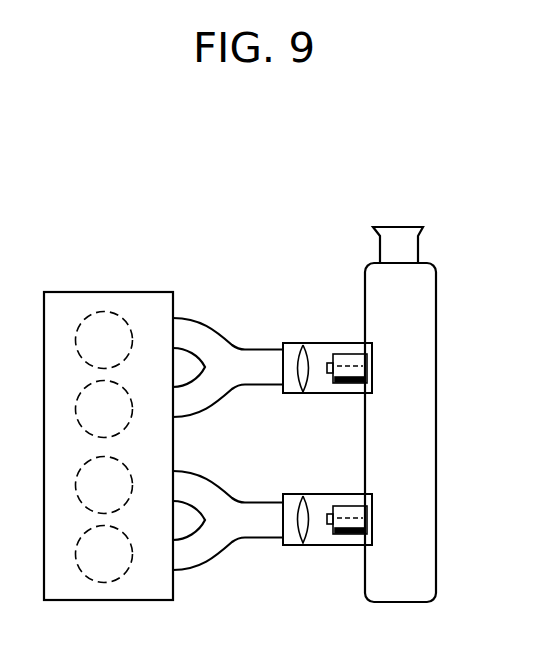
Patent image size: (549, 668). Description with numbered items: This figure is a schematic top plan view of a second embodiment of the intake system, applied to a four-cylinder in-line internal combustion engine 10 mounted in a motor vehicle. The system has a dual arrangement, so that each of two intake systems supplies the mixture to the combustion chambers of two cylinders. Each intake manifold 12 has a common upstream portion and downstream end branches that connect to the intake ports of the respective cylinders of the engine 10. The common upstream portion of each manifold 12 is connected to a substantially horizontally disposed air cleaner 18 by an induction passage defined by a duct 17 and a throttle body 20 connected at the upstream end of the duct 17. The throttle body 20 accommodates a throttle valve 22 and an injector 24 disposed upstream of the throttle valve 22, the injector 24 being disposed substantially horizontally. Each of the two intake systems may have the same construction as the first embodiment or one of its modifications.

The internal combustion engine 10 is at (128, 292).
The intake manifold 12 is at (206, 322).
The duct 17 is at (257, 348).
The air cleaner 18 is at (437, 397).
The throttle body 20 is at (335, 343).
The throttle valve 22 is at (296, 393).
The injector 24 is at (348, 384).